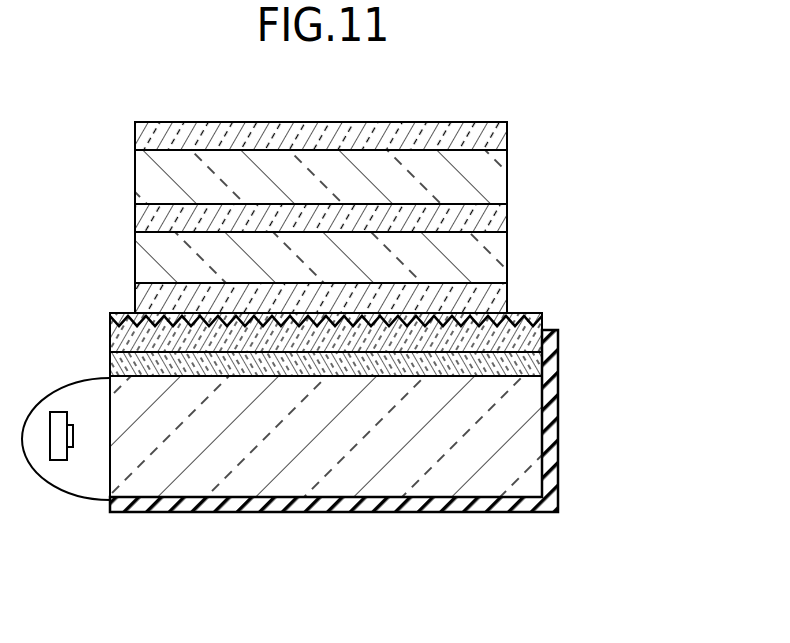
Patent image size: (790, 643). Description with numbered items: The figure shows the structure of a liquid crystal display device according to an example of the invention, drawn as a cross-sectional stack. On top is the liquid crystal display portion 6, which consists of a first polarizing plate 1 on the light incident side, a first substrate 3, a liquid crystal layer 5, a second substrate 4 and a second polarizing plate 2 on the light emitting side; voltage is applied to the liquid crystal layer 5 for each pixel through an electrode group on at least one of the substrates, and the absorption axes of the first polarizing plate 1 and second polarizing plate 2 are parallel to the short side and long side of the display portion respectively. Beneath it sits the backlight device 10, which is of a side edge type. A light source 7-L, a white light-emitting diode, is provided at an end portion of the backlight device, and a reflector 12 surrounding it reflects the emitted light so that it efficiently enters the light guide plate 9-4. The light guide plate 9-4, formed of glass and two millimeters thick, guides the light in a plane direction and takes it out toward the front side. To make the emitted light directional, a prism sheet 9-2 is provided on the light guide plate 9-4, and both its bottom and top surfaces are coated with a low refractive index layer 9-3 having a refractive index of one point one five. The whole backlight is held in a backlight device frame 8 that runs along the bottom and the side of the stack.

The first polarizing plate 1 is at (507, 293).
The second polarizing plate 2 is at (507, 136).
The first substrate 3 is at (507, 253).
The second substrate 4 is at (507, 178).
The liquid crystal layer 5 is at (507, 214).
The liquid crystal display portion 6 is at (588, 121).
The light source 7-L is at (56, 461).
The backlight device frame 8 is at (558, 486).
The prism sheet 9-2 is at (558, 344).
The low refractive index layer 9-3 is at (543, 316).
The light guide plate 9-4 is at (517, 423).
The backlight device 10 is at (675, 303).
The reflector 12 is at (64, 379).